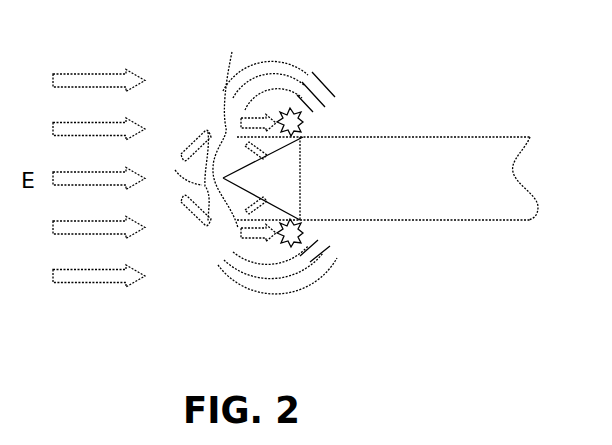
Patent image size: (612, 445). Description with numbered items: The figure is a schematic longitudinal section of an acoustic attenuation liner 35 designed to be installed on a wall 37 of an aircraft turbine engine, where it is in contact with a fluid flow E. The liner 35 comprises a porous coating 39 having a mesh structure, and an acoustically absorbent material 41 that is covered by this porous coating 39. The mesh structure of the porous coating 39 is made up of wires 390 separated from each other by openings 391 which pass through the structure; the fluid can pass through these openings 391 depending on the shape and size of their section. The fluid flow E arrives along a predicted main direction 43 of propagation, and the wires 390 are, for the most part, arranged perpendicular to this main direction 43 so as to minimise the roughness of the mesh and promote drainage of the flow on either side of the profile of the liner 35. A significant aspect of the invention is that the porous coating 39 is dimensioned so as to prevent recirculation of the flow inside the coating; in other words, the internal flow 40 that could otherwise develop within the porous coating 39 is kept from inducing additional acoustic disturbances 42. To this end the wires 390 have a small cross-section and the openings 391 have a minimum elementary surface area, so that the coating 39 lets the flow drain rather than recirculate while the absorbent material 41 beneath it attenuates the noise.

The acoustic attenuation liner 35 is at (215, 119).
The wall 37 is at (438, 157).
The porous coating 39 is at (192, 200).
The wires 390 is at (296, 106).
The openings 391 is at (229, 80).
The internal flow 40 is at (268, 118).
The acoustically absorbent material 41 is at (290, 181).
The acoustic disturbances 42 is at (300, 128).
The main direction of propagation 43 is at (78, 183).